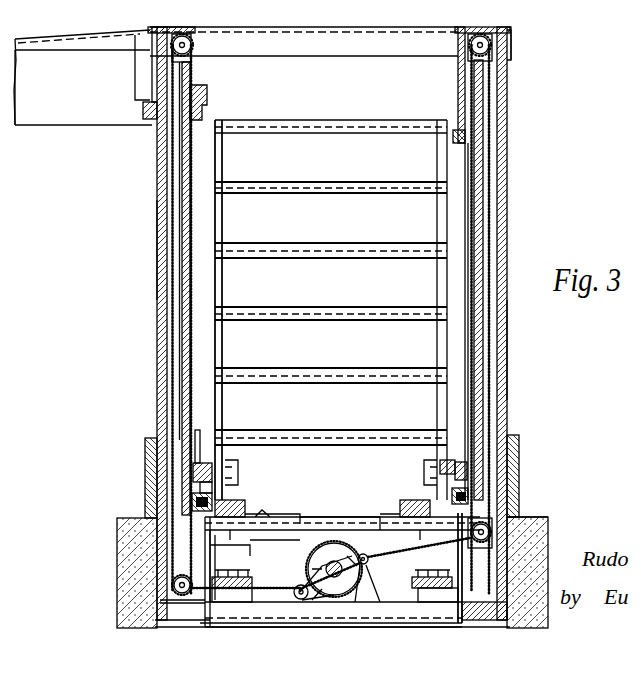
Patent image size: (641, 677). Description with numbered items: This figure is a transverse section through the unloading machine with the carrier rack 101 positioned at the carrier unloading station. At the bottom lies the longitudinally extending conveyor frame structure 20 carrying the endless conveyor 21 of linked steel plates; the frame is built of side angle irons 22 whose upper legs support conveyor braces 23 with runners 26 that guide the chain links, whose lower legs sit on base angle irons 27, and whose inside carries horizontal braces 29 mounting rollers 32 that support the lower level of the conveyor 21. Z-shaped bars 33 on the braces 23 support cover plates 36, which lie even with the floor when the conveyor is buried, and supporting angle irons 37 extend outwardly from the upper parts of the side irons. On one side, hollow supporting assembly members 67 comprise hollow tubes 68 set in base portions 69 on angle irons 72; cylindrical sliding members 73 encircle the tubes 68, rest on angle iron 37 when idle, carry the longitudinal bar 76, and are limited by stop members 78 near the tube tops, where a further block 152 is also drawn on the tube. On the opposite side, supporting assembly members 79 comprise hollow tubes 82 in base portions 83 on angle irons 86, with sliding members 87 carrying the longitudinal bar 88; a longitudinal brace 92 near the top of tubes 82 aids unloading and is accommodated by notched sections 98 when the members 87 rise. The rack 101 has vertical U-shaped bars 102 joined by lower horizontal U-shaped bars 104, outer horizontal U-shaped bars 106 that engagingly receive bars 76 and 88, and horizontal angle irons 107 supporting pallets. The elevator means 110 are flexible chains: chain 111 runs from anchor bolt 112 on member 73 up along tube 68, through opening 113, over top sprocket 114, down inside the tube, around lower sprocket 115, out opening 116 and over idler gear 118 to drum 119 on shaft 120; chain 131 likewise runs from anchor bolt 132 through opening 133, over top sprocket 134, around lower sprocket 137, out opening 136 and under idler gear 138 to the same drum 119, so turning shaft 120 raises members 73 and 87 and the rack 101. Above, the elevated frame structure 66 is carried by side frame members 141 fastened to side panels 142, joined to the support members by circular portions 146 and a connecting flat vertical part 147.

The conveyor frame structure 20 is at (321, 517).
The endless conveyor 21 is at (248, 513).
The side angle irons 22 is at (210, 560).
The conveyor braces 23 is at (252, 533).
The runners 26 is at (240, 531).
The base angle irons 27 is at (208, 628).
The horizontal braces 29 is at (352, 627).
The rollers 32 is at (230, 589).
The Z-shaped bars 33 is at (281, 504).
The cover plates 36 is at (351, 517).
The supporting angle irons 37 is at (462, 548).
The elevated frame structure 66 is at (72, 134).
The hollow supporting assembly members 67 is at (157, 277).
The hollow tubes 68 is at (157, 212).
The base portions 69 is at (160, 605).
The angle irons 72 is at (155, 628).
The sliding members 73 is at (145, 470).
The longitudinal bar 76 is at (207, 460).
The stop members 78 is at (150, 119).
The supporting assembly members 79 is at (533, 363).
The hollow tubes 82 is at (507, 219).
The base portions 83 is at (527, 572).
The angle irons 86 is at (502, 628).
The sliding members 87 is at (519, 458).
The longitudinal bar 88 is at (440, 466).
The longitudinal brace 92 is at (456, 130).
The notched sections 98 is at (470, 452).
The carrier rack 101 is at (357, 113).
The vertical U-shaped bars 102 is at (219, 158).
The horizontal U-shaped bars 104 is at (238, 458).
The horizontal U-shaped bars 106 is at (210, 463).
The horizontal angle irons 107 is at (307, 178).
The elevator means 110 is at (172, 319).
The chain 111 is at (190, 352).
The anchor bolt 112 is at (212, 499).
The opening 113 is at (190, 64).
The top sprocket 114 is at (191, 40).
The lower sprocket 115 is at (172, 586).
The opening 116 is at (160, 549).
The idler gear 118 is at (297, 597).
The drum 119 is at (310, 575).
The shaft 120 is at (320, 559).
The chain 131 is at (507, 402).
The anchor bolt 132 is at (452, 494).
The opening 133 is at (458, 66).
The top sprocket 134 is at (482, 34).
The opening 136 is at (527, 543).
The lower sprocket 137 is at (492, 536).
The idler gear 138 is at (367, 556).
The side frame members 141 is at (289, 56).
The side panels 142 is at (33, 125).
The circular portions 146 is at (165, 27).
The connecting flat vertical part 147 is at (511, 46).
The stop block 152 is at (207, 95).